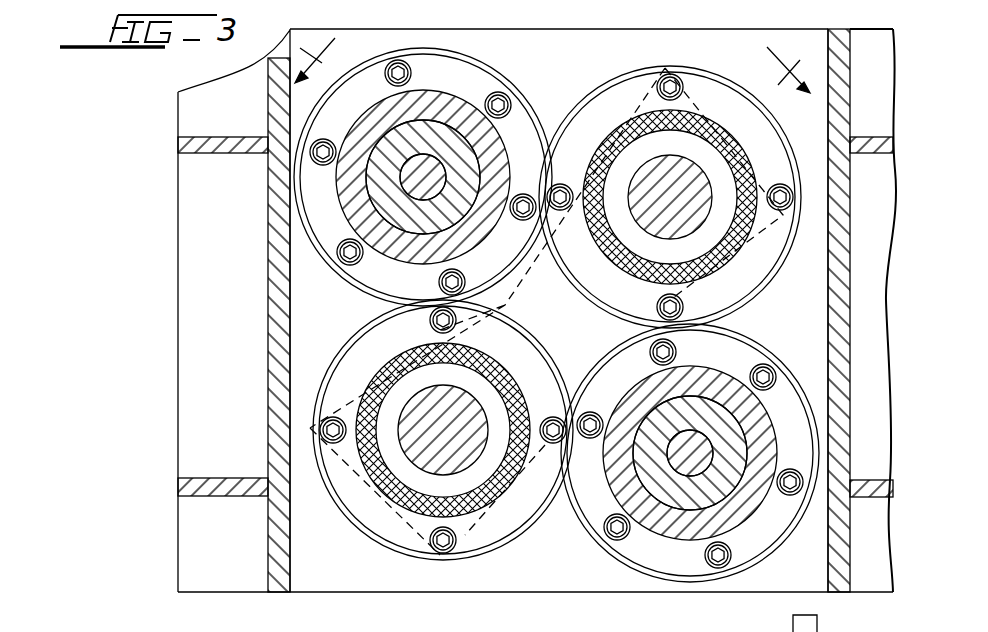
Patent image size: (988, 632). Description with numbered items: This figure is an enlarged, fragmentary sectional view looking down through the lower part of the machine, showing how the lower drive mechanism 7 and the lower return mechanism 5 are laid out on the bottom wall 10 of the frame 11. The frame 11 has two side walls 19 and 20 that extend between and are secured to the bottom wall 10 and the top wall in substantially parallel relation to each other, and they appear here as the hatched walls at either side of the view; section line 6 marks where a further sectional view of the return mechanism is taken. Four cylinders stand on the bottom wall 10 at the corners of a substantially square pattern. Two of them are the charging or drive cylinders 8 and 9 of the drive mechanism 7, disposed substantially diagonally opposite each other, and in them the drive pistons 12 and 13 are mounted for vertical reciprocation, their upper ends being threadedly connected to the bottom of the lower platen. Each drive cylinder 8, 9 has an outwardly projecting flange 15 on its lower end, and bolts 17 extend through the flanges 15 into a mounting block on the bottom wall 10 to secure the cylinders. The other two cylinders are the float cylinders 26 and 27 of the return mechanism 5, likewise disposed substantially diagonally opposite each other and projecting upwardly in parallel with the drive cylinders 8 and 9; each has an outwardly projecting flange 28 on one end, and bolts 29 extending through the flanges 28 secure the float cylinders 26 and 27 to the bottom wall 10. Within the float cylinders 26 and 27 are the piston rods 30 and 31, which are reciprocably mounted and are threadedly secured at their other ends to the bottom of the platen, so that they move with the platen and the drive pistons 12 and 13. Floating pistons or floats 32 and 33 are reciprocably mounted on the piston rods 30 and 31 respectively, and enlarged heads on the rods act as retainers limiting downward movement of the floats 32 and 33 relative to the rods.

The lower return mechanism 5 is at (457, 48).
The section line 6- 6 is at (552, 60).
The lower drive mechanism 7 is at (698, 62).
The drive cylinder 8 is at (697, 128).
The drive cylinder 9 is at (390, 508).
The bottom wall 10 is at (603, 50).
The frame 11 is at (862, 29).
The drive piston 12 is at (693, 167).
The drive piston 13 is at (412, 408).
The flange 15 is at (757, 270).
The bolt 17 is at (673, 87).
The side wall 19 is at (268, 252).
The side wall 20 is at (840, 258).
The float cylinder 26 is at (427, 100).
The float cylinder 27 is at (668, 527).
The flange 28 is at (485, 77).
The bolt 29 is at (326, 140).
The piston rod 30 is at (403, 182).
The piston rod 31 is at (692, 455).
The floating piston 32 is at (393, 200).
The floating piston 33 is at (738, 442).